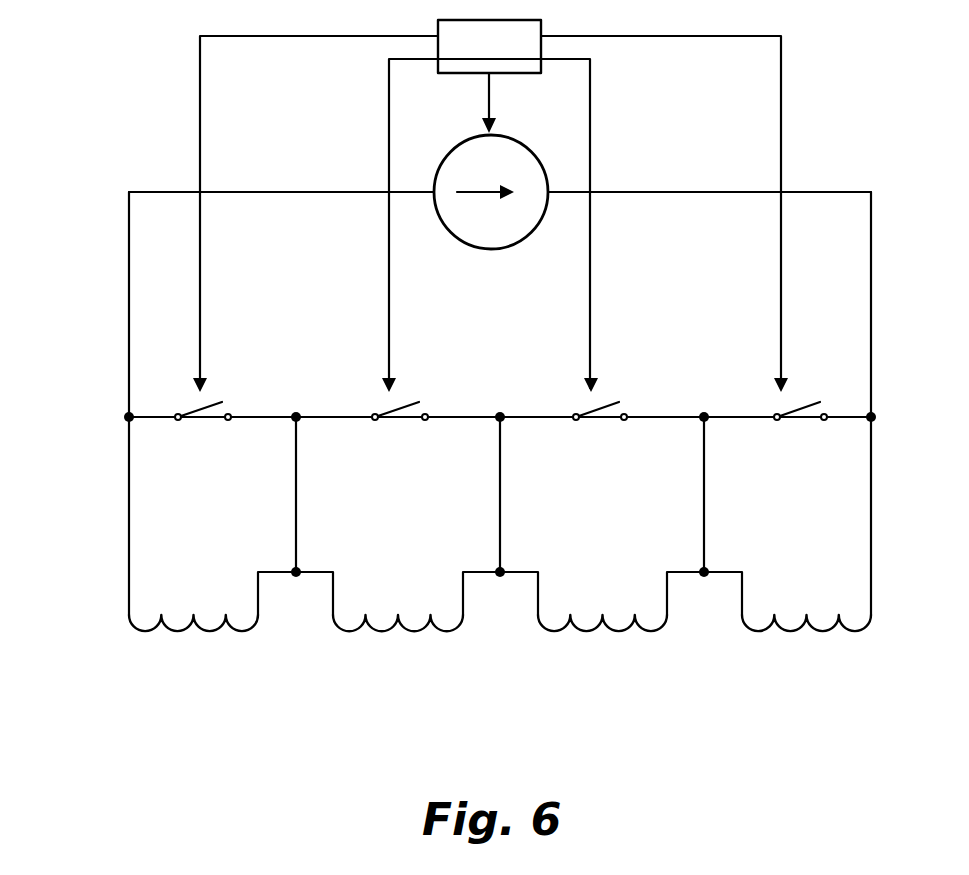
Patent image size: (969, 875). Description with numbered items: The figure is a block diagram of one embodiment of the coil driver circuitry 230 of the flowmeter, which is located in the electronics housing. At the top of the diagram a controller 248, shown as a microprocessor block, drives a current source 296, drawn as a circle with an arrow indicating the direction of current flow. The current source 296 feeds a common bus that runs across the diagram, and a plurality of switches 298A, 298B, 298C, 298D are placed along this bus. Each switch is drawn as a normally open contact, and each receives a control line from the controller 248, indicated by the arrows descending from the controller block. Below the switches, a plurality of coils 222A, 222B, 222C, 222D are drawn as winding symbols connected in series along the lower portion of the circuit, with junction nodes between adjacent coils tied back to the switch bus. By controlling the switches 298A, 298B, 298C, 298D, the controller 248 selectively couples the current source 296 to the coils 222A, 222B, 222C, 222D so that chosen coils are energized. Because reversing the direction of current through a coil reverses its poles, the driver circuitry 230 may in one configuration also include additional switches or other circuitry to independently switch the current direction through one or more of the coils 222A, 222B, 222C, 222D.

The coil driver circuitry 230 is at (93, 118).
The controller 248 is at (489, 76).
The current source 296 is at (508, 134).
The switch 298A is at (206, 420).
The switch 298B is at (403, 420).
The switch 298C is at (601, 420).
The switch 298D is at (803, 420).
The coil 222A is at (189, 638).
The coil 222B is at (401, 638).
The coil 222C is at (603, 638).
The coil 222D is at (807, 638).